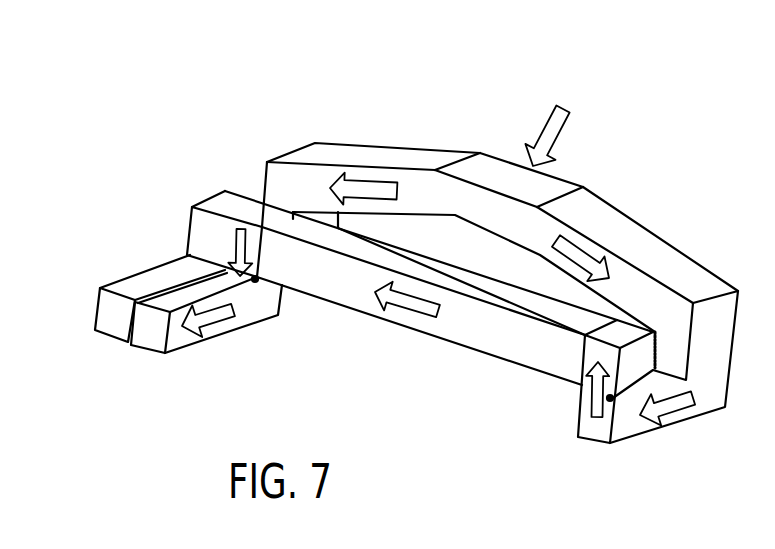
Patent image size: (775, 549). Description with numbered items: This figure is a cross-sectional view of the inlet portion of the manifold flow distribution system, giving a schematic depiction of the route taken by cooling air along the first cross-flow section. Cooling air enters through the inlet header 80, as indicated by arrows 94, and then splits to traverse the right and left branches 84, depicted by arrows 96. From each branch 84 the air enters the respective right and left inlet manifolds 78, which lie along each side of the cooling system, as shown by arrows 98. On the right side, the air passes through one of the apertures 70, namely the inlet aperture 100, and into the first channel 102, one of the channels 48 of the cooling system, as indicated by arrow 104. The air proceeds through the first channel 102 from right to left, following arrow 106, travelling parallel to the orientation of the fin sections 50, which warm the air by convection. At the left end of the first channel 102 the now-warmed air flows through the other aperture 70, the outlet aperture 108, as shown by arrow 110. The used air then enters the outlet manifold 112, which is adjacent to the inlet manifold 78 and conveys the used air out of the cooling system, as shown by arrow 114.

The channel 48 is at (421, 307).
The first channel 102 is at (492, 335).
The fin section 50 is at (443, 280).
The aperture 70 is at (450, 389).
The inlet manifold 78 is at (153, 284).
The inlet header 80 is at (510, 217).
The branch 84 is at (360, 153).
The arrow 94 is at (544, 124).
The arrow 96 is at (372, 182).
The arrow 98 is at (672, 408).
The inlet aperture 100 is at (611, 400).
The arrow 104 is at (588, 393).
The arrow 106 is at (410, 316).
The outlet aperture 108 is at (257, 281).
The arrow 110 is at (232, 243).
The outlet manifold 112 is at (148, 338).
The arrow 114 is at (213, 323).